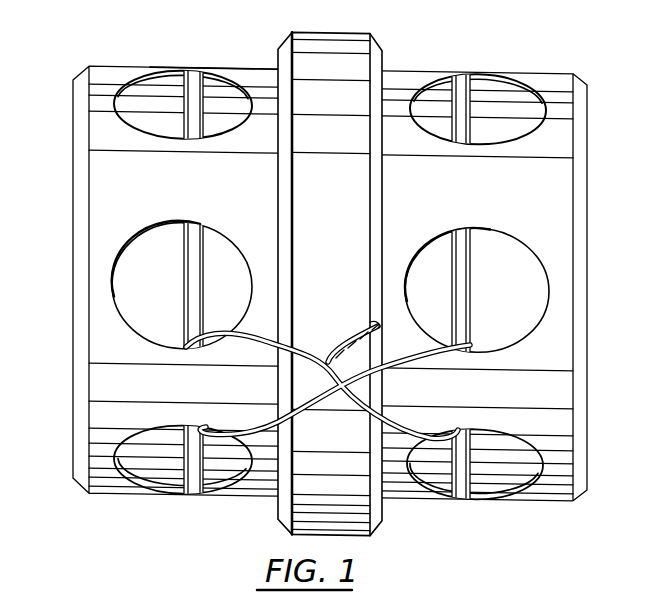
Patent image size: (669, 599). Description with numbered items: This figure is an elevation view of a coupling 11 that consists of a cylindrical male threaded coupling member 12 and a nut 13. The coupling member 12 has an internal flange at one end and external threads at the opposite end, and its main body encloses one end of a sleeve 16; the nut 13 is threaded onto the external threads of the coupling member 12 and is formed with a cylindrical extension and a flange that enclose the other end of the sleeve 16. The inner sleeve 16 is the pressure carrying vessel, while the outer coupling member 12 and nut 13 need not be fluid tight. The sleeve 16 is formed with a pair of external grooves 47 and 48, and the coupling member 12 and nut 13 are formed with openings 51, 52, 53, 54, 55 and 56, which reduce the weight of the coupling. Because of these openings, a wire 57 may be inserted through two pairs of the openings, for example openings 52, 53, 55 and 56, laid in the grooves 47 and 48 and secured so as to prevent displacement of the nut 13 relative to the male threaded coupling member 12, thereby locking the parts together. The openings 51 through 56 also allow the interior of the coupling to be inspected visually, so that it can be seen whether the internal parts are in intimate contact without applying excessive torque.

The coupling 11 is at (388, 64).
The cylindrical male threaded coupling member 12 is at (242, 68).
The nut 13 is at (361, 33).
The sleeve 16 is at (528, 281).
The external groove 47 is at (198, 87).
The external groove 48 is at (466, 95).
The opening 51 is at (118, 95).
The opening 52 is at (113, 270).
The opening 53 is at (122, 450).
The opening 54 is at (575, 101).
The opening 55 is at (551, 290).
The opening 56 is at (540, 454).
The wire 57 is at (467, 343).